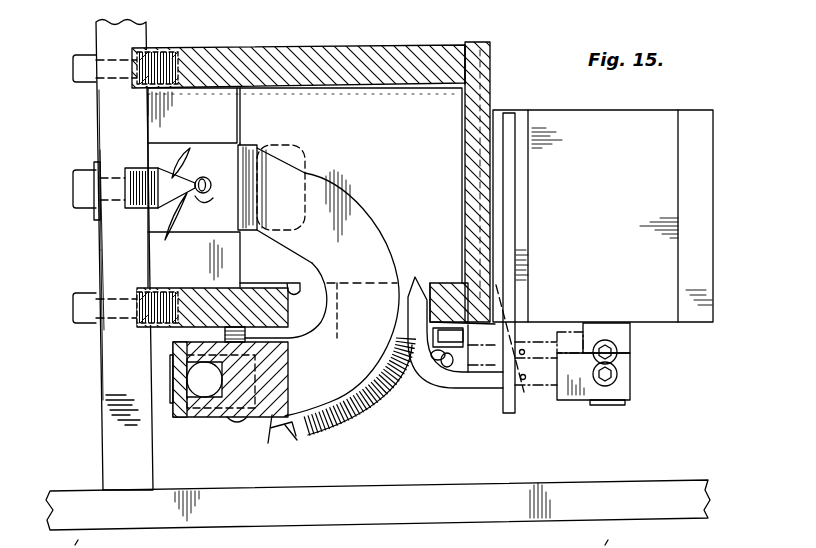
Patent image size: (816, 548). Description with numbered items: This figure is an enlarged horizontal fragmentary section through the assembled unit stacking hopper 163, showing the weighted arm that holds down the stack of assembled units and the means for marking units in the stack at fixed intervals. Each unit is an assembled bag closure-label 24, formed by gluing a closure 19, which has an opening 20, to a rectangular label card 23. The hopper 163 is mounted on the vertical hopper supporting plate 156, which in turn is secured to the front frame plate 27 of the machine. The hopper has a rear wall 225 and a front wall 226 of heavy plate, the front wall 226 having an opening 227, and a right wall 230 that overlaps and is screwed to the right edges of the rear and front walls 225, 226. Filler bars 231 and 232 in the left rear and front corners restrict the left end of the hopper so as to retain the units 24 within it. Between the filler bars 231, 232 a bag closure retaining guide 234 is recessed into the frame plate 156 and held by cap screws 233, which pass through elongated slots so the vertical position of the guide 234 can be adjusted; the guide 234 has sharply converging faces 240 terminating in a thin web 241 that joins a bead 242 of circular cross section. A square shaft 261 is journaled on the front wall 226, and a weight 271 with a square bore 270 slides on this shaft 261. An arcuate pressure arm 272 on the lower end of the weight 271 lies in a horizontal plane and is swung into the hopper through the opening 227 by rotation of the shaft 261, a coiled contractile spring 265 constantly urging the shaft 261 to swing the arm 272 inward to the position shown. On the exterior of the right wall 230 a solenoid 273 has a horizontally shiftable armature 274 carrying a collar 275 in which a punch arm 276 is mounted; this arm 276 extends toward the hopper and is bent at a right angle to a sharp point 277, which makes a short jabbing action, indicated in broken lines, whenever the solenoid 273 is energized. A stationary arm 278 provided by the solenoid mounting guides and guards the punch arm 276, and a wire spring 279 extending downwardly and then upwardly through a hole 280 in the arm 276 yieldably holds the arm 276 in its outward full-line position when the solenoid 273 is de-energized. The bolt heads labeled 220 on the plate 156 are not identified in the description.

The closure 19 is at (217, 147).
The opening 20 is at (203, 177).
The label card 23 is at (240, 103).
The assembled bag closure-label 24 is at (328, 113).
The front frame plate 27 is at (362, 490).
The hopper supporting plate 156 is at (112, 410).
The assembled unit stacking hopper 163 is at (494, 49).
The bolt 220 is at (74, 80).
The rear wall 225 is at (380, 50).
The front wall 226 is at (173, 327).
The opening 227 is at (296, 282).
The right wall 230 is at (480, 88).
The filler bar 231 is at (152, 117).
The filler bar 232 is at (155, 271).
The cap screw 233 is at (78, 184).
The bag closure retaining guide 234 is at (136, 203).
The converging faces 240 is at (182, 161).
The web 241 is at (198, 200).
The bead 242 is at (207, 186).
The square shaft 261 is at (198, 378).
The coiled contractile spring 265 is at (366, 405).
The square bore 270 is at (222, 392).
The weight 271 is at (287, 370).
The arcuate pressure arm 272 is at (378, 225).
The solenoid 273 is at (699, 191).
The armature 274 is at (620, 337).
The collar 275 is at (628, 362).
The punch arm 276 is at (472, 376).
The sharp point 277 is at (408, 298).
The stationary arm 278 is at (510, 416).
The wire spring 279 is at (520, 327).
The hole 280 is at (526, 380).